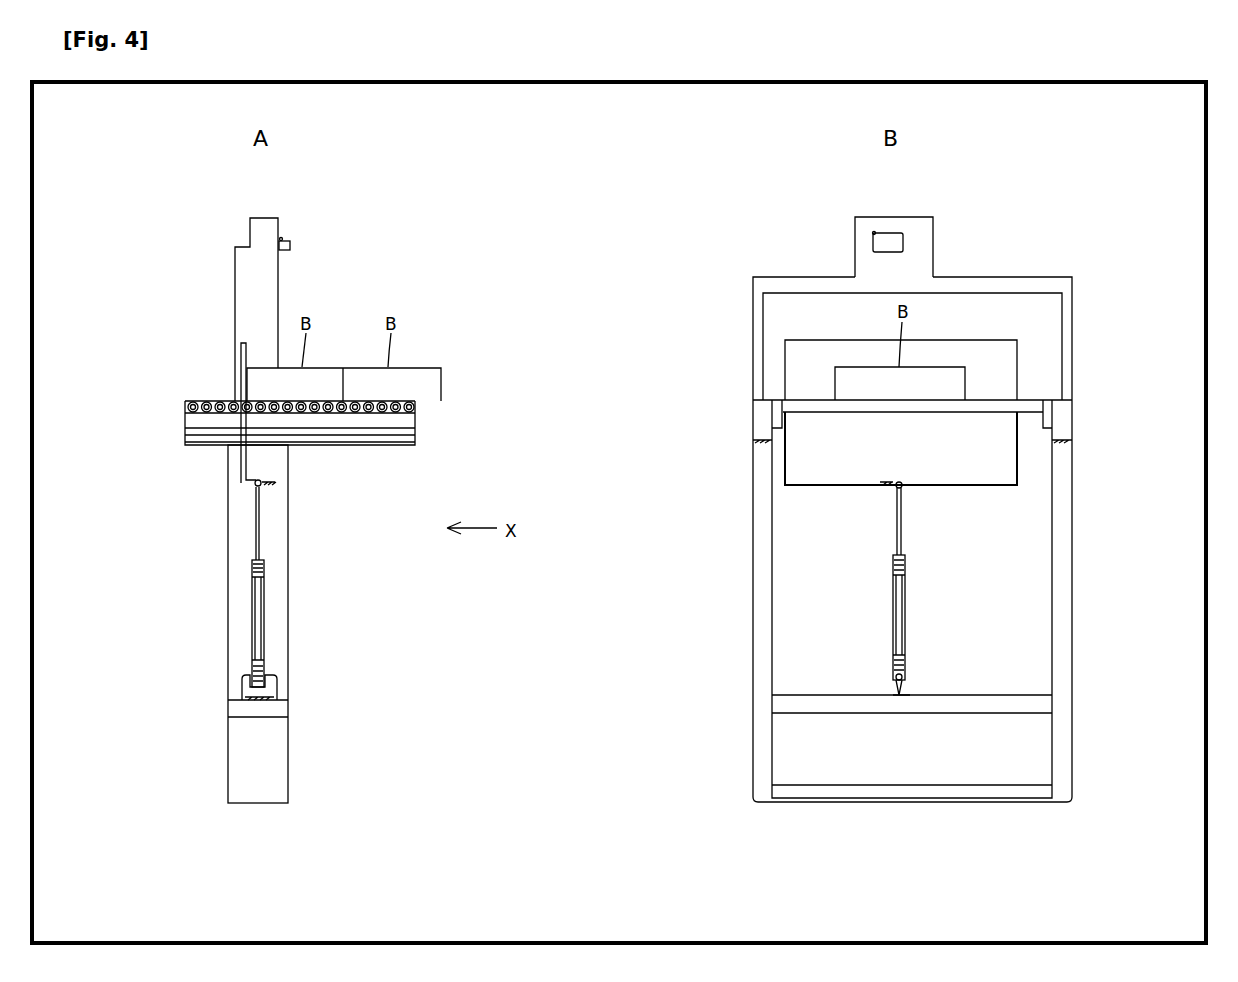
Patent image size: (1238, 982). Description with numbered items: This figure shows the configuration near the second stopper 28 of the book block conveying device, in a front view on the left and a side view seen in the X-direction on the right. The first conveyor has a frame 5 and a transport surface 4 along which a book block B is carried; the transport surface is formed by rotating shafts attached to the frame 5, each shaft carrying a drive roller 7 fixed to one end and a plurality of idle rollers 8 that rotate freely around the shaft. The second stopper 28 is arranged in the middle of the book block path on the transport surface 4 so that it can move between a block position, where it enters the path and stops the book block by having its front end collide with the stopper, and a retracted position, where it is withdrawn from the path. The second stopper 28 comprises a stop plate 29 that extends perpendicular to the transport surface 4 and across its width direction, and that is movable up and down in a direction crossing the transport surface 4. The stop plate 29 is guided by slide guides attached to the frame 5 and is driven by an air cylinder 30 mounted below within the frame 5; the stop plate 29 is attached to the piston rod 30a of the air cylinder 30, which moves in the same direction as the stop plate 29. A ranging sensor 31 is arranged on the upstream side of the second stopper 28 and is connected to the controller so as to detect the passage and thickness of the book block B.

The transport surface 4 is at (212, 400).
The frame 5 is at (234, 274).
The drive roller 7 is at (185, 410).
The idle roller 8 is at (808, 403).
The second stopper 28 is at (580, 590).
The stop plate 29 is at (248, 357).
The air cylinder 30 is at (266, 620).
The piston rod 30a is at (262, 535).
The ranging sensor 31 is at (292, 247).